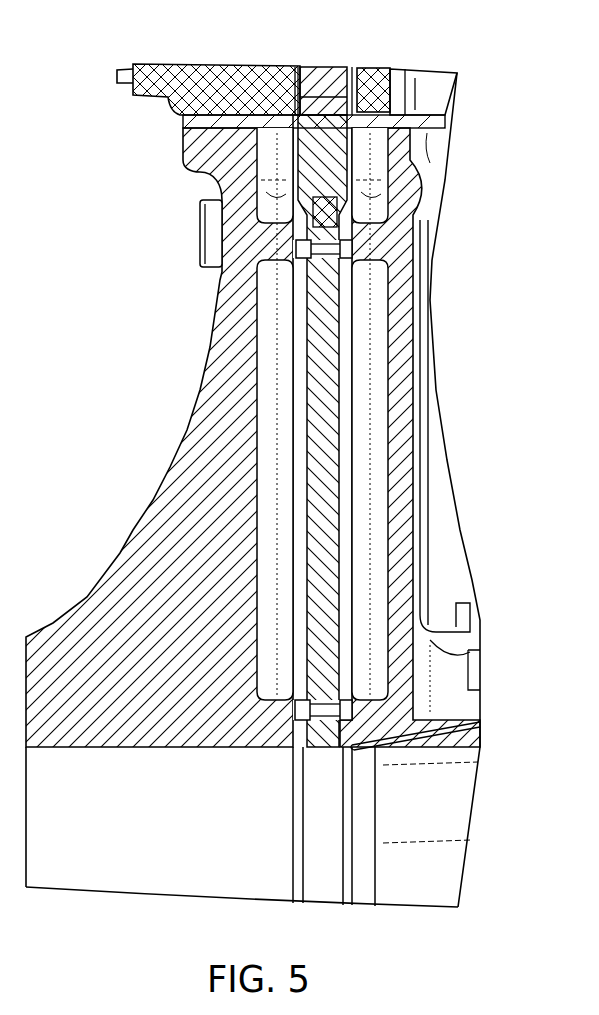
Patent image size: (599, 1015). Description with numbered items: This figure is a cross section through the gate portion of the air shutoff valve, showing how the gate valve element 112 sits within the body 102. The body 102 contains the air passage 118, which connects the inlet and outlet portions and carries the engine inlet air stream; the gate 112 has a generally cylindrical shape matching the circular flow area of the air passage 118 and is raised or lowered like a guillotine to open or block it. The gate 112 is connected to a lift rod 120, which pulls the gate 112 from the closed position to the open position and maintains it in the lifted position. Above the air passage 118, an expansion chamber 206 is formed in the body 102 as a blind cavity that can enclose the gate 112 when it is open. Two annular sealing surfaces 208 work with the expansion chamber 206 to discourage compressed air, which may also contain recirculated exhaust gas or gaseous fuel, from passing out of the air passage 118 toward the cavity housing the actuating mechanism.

The body 102 is at (90, 604).
The gate valve element 112 is at (327, 388).
The air passage 118 is at (466, 811).
The lift rod 120 is at (323, 75).
The expansion chamber 206 is at (375, 497).
The annular sealing surfaces 208 is at (354, 746).